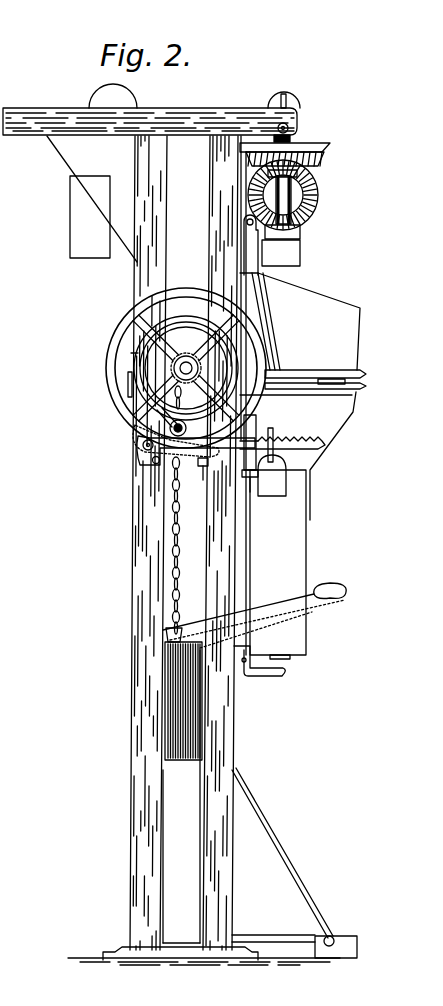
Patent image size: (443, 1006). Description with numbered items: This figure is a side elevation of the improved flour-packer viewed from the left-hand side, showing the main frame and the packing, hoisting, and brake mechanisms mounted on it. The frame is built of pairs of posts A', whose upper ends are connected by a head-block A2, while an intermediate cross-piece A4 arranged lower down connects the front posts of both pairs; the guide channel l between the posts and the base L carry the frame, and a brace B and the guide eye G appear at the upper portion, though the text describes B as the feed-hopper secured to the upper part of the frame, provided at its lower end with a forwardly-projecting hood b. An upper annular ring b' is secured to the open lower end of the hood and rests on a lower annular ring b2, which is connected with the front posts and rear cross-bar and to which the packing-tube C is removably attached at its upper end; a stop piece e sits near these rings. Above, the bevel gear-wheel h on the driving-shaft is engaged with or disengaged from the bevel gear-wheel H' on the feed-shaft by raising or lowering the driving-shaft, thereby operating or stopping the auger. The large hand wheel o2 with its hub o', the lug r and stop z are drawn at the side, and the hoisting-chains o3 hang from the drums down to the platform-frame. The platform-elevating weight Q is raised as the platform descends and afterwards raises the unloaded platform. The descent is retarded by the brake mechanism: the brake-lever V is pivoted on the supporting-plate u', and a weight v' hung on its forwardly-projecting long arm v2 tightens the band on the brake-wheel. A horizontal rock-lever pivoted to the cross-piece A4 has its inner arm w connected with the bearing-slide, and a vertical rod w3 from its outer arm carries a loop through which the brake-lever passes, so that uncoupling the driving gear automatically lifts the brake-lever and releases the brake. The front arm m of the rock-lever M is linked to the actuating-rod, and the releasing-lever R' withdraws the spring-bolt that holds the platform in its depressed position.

The posts A' is at (184, 543).
The guide channel between standards l is at (181, 796).
The head-block A2 is at (150, 109).
The guide eye on beam G is at (268, 103).
The feed-hopper B is at (92, 199).
The platform-elevating weight Q is at (90, 217).
The bevel gear-wheel H' is at (295, 152).
The bevel gear-wheel h is at (318, 197).
The inner arm w is at (244, 219).
The intermediate cross-piece A4 is at (240, 257).
The vertical rod w3 is at (246, 284).
The hand wheel o2 is at (190, 355).
The shaft hub o' is at (186, 368).
The lug r is at (128, 348).
The stop z is at (128, 378).
The brake-lever V is at (140, 452).
The supporting-plate u' is at (161, 441).
The hoisting-chains o3 is at (190, 510).
The front arm m is at (254, 671).
The hood b is at (300, 396).
The upper annular frame or ring b' is at (315, 360).
The lower annular frame or ring b2 is at (294, 389).
The stop piece e is at (331, 388).
The long arm of the brake-lever v2 is at (326, 446).
The weight v' is at (272, 475).
The packing-tube C is at (276, 549).
The releasing-lever R' is at (259, 672).
The base L is at (276, 926).